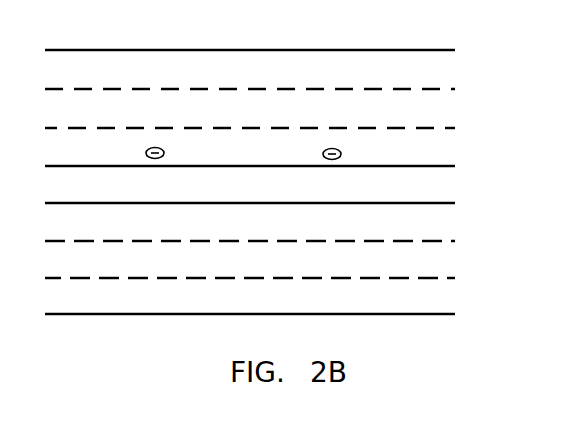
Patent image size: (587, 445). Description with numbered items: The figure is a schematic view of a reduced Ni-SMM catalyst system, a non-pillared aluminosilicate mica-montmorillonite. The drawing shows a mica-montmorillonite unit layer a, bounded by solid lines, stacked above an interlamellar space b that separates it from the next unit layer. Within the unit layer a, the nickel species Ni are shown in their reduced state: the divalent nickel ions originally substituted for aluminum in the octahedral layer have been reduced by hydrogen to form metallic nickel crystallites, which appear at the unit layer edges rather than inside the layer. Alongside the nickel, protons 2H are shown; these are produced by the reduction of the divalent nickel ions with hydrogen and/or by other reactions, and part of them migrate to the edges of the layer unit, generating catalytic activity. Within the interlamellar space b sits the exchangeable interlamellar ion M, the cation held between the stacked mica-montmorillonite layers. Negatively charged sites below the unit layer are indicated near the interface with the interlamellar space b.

The mica-montmorillonite unit layer a is at (475, 52).
The interlamellar space b is at (475, 170).
The nickel species Ni is at (253, 108).
The protons 2H is at (248, 108).
The exchangeable interlamellar ion M is at (252, 185).